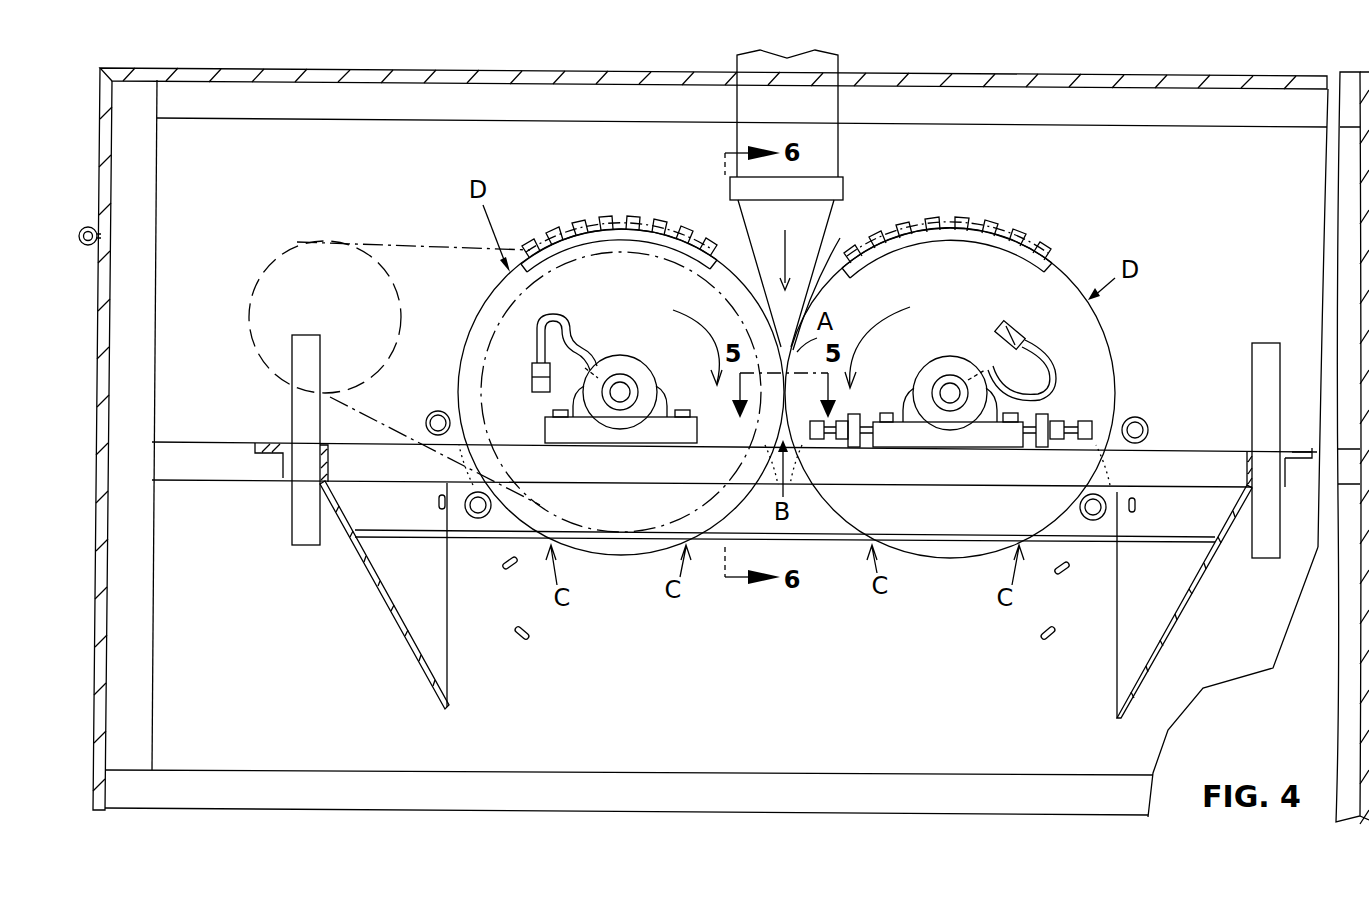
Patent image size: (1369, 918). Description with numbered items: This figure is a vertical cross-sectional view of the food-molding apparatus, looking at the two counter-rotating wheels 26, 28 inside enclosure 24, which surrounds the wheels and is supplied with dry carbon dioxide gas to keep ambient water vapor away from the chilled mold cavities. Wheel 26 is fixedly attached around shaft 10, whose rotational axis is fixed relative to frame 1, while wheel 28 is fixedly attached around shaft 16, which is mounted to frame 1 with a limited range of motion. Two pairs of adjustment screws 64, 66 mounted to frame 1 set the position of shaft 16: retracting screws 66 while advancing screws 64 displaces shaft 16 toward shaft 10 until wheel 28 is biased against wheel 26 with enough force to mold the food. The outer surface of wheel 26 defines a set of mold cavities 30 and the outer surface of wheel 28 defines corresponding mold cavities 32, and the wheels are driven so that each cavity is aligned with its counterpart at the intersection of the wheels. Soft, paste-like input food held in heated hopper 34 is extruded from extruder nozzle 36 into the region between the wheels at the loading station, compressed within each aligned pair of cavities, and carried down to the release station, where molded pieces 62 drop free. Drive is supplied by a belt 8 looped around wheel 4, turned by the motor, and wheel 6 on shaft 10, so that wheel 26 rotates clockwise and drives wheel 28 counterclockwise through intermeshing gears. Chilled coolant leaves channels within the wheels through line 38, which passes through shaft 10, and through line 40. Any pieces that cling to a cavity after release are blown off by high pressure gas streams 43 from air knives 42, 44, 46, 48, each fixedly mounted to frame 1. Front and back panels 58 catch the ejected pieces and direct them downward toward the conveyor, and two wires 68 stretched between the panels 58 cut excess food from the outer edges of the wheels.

The frame 1 is at (1140, 117).
The wheel 4 is at (280, 255).
The wheel 6 is at (517, 300).
The drive belt 8 is at (432, 243).
The shaft 10 is at (625, 380).
The shaft 16 is at (940, 378).
The enclosure 24 is at (282, 70).
The wheel 26 is at (624, 222).
The wheel 28 is at (1034, 233).
The mold cavities 30 is at (580, 240).
The mold cavities 32 is at (963, 227).
The heated hopper 34 is at (838, 165).
The extruder nozzle 36 is at (823, 240).
The line 38 is at (560, 312).
The line 40 is at (1053, 360).
The air knife 42 is at (437, 410).
The high pressure gas streams 43 is at (460, 432).
The air knife 44 is at (478, 520).
The air knife 46 is at (1148, 430).
The air knife 48 is at (1093, 520).
The front and back panels 58 is at (393, 622).
The molded pieces 62 is at (524, 640).
The adjustment screws 64 is at (1084, 420).
The adjustment screws 66 is at (818, 447).
The wires 68 is at (838, 545).